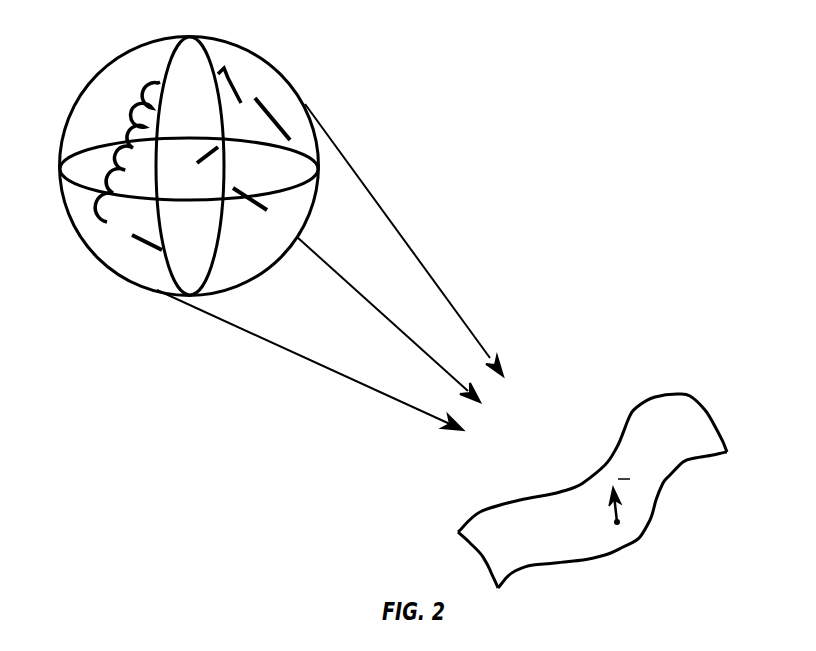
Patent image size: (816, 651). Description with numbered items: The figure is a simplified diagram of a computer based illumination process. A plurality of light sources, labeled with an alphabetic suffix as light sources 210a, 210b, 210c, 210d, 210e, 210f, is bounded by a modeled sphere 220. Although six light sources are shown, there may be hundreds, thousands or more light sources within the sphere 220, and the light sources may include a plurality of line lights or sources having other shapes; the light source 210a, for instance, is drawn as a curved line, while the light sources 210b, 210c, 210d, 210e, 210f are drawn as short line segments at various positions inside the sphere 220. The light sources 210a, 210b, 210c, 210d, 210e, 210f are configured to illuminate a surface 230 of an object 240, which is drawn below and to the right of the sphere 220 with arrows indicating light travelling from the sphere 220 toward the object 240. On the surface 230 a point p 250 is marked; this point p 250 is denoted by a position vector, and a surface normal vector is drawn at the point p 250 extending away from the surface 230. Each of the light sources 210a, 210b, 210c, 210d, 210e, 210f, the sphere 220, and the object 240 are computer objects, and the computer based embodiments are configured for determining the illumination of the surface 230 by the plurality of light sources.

The light source 210a is at (128, 112).
The light source 210b is at (229, 75).
The light source 210c is at (270, 106).
The light source 210d is at (221, 152).
The light source 210e is at (248, 202).
The light source 210f is at (140, 244).
The modeled sphere 220 is at (284, 79).
The surface 230 is at (605, 481).
The object 240 is at (694, 397).
The point p 250 is at (614, 523).